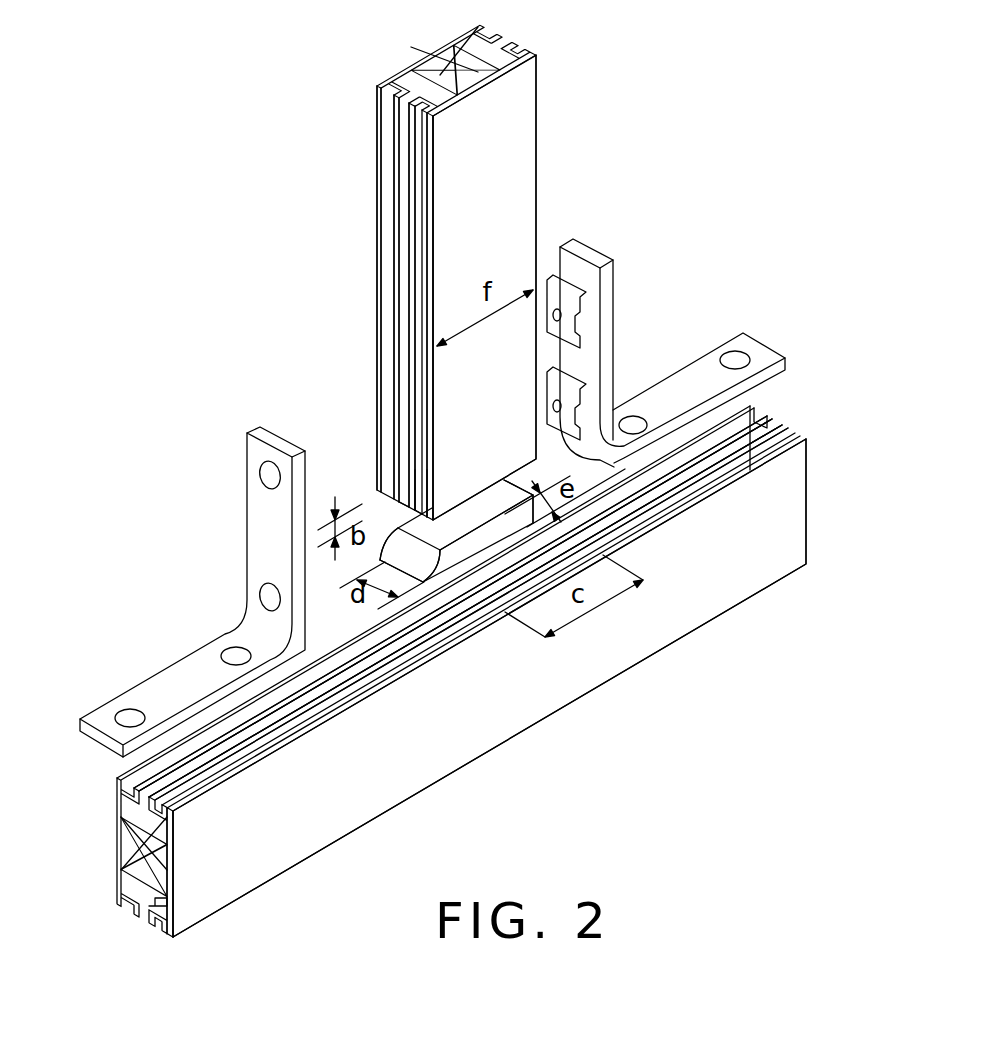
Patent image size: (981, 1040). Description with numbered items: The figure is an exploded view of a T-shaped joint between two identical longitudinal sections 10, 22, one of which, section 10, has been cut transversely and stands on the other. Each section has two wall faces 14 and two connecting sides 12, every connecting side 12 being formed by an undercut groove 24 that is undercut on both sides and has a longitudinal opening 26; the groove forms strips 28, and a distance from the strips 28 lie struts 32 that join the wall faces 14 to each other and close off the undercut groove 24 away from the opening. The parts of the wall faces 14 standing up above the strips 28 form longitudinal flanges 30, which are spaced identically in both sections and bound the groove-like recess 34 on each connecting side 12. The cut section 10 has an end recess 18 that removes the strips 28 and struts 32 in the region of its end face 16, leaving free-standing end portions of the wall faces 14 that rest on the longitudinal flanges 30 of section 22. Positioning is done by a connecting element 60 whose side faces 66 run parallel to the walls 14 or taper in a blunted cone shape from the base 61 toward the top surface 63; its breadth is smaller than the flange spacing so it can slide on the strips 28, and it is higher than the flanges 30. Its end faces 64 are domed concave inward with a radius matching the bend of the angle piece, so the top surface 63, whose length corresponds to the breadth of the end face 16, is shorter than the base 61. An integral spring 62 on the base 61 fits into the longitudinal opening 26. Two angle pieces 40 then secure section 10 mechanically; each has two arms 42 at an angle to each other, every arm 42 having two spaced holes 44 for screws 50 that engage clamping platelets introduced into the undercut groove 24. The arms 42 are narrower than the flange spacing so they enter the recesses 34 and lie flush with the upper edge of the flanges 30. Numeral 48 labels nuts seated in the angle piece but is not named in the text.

The longitudinal section 10 is at (548, 114).
The connecting side 12 is at (404, 239).
The wall face 14 is at (445, 182).
The end face 16 is at (407, 500).
The end recess 18 is at (425, 478).
The longitudinal section 22 is at (768, 489).
The undercut groove 24 is at (429, 84).
The longitudinal opening 26 is at (415, 290).
The strip 28 is at (399, 82).
The longitudinal flange 30 is at (750, 417).
The strut 32 is at (450, 78).
The groove-like recess 34 is at (757, 433).
The angle piece 40 is at (617, 348).
The arm 42 is at (268, 556).
The hole 44 is at (125, 712).
The T-nut 48 is at (575, 297).
The screw 50 is at (557, 315).
The connecting element 60 is at (575, 528).
The base 61 is at (628, 587).
The spring 62 is at (445, 578).
The top surface 63 is at (412, 575).
The end face 64 is at (388, 562).
The face 66 is at (495, 530).